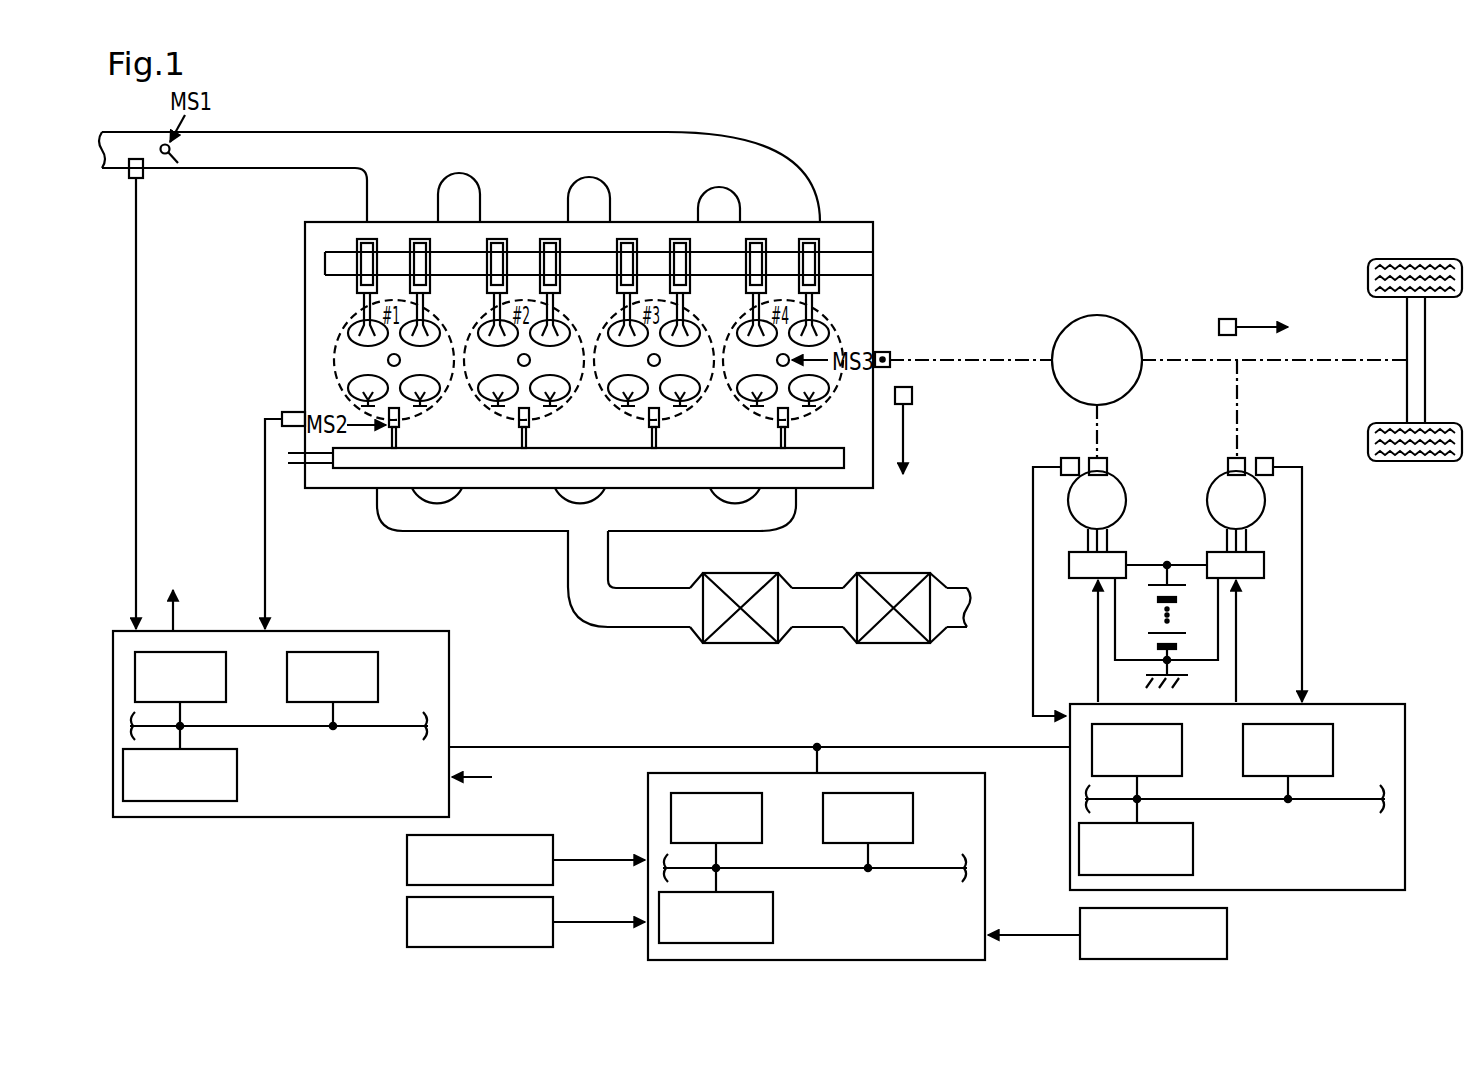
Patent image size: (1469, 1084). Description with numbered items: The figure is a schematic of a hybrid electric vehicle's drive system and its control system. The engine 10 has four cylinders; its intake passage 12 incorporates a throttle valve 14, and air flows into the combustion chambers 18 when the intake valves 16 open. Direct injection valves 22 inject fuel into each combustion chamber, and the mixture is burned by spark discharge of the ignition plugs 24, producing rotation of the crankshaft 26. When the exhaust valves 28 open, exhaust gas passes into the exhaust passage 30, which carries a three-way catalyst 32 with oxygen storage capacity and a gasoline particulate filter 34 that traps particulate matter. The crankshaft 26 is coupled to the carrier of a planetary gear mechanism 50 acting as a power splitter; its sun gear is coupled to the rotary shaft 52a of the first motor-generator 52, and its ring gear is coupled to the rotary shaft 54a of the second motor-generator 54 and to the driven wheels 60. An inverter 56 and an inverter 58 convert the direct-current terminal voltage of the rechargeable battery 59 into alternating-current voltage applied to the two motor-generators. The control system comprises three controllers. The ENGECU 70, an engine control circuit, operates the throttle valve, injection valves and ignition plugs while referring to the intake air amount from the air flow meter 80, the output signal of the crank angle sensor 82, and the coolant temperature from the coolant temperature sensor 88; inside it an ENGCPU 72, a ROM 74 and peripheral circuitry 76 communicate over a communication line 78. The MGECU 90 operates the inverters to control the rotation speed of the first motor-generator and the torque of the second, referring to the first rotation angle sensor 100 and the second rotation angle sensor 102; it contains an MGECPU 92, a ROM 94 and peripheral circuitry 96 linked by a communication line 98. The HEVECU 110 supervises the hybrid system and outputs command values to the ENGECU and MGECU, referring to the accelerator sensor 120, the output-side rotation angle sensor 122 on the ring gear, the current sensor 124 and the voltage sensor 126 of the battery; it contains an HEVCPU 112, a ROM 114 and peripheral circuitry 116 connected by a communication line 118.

The engine 10 is at (876, 196).
The intake passage 12 is at (133, 142).
The throttle valve 14 is at (172, 148).
The intake valves 16 is at (362, 310).
The combustion chambers 18 is at (333, 352).
The direct injection valves 22 is at (400, 426).
The ignition plugs 24 is at (401, 360).
The crankshaft 26 is at (884, 350).
The exhaust valves 28 is at (428, 402).
The exhaust passage 30 is at (664, 531).
The three-way catalyst 32 is at (745, 573).
The gasoline particulate filter 34 is at (895, 573).
The planetary gear mechanism 50 is at (1135, 327).
The first motor-generator 52 is at (1127, 498).
The rotary shaft 52a is at (1108, 462).
The second motor-generator 54 is at (1210, 514).
The rotary shaft 54a is at (1233, 457).
The inverter 56 is at (1069, 572).
The inverter 58 is at (1264, 572).
The battery 59 is at (1178, 588).
The driven wheels 60 is at (1462, 461).
The ENGECU 70 is at (367, 631).
The ENGCPU 72 is at (218, 652).
The ROM 74 is at (370, 652).
The peripheral circuitry 76 is at (238, 778).
The communication line 78 is at (398, 726).
The air flow meter 80 is at (147, 178).
The crank angle sensor 82 is at (913, 396).
The coolant temperature sensor 88 is at (282, 414).
The MGECU 90 is at (1388, 704).
The MGECPU 92 is at (1172, 724).
The ROM 94 is at (1323, 724).
The peripheral circuitry 96 is at (1195, 845).
The communication line 98 is at (1328, 800).
The first rotation angle sensor 100 is at (1061, 462).
The second rotation angle sensor 102 is at (1265, 457).
The HEVECU 110 is at (972, 773).
The HEVCPU 112 is at (750, 793).
The ROM 114 is at (902, 793).
The peripheral circuitry 116 is at (775, 912).
The communication line 118 is at (905, 870).
The accelerator sensor 120 is at (1227, 935).
The output-side rotation angle sensor 122 is at (1226, 318).
The current sensor 124 is at (407, 862).
The voltage sensor 126 is at (407, 924).